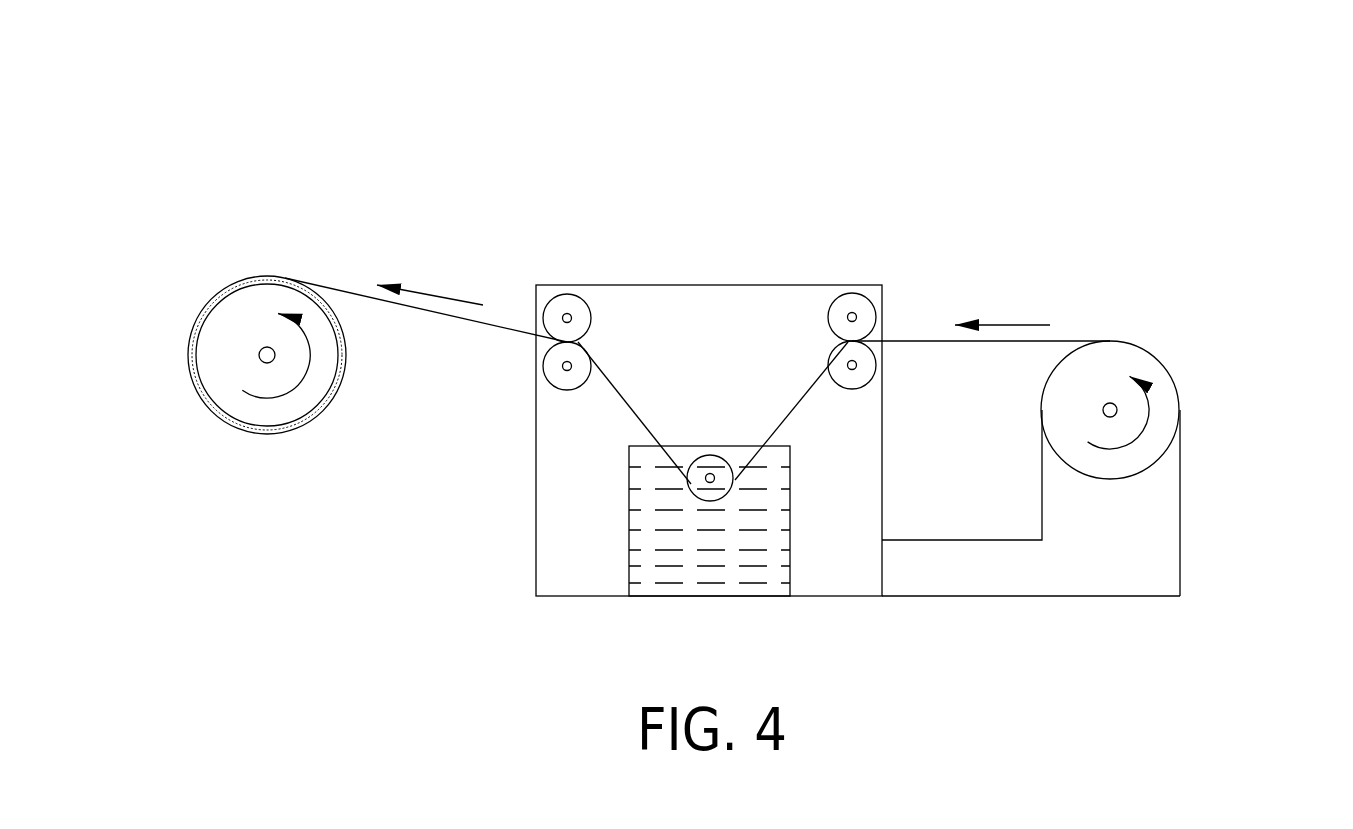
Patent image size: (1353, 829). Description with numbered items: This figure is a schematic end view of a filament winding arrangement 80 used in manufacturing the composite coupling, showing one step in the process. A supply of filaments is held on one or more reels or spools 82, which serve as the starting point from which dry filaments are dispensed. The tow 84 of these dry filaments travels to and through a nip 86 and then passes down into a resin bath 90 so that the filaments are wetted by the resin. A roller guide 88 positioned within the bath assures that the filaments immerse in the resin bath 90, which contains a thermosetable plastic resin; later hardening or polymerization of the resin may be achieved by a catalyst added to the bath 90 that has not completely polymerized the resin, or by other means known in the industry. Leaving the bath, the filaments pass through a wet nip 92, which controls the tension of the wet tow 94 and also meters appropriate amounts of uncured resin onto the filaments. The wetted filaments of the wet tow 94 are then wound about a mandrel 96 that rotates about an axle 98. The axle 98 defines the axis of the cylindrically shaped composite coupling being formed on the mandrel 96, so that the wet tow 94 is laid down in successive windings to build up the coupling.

The filament winding arrangement 80 is at (1265, 198).
The reel or spool 82 is at (1057, 445).
The tow 84 is at (981, 299).
The nip 86 is at (887, 306).
The roller guide 88 is at (724, 497).
The resin bath 90 is at (670, 560).
The wet nip 92 is at (603, 309).
The wet tow 94 is at (426, 284).
The mandrel 96 is at (234, 326).
The axle 98 is at (198, 388).